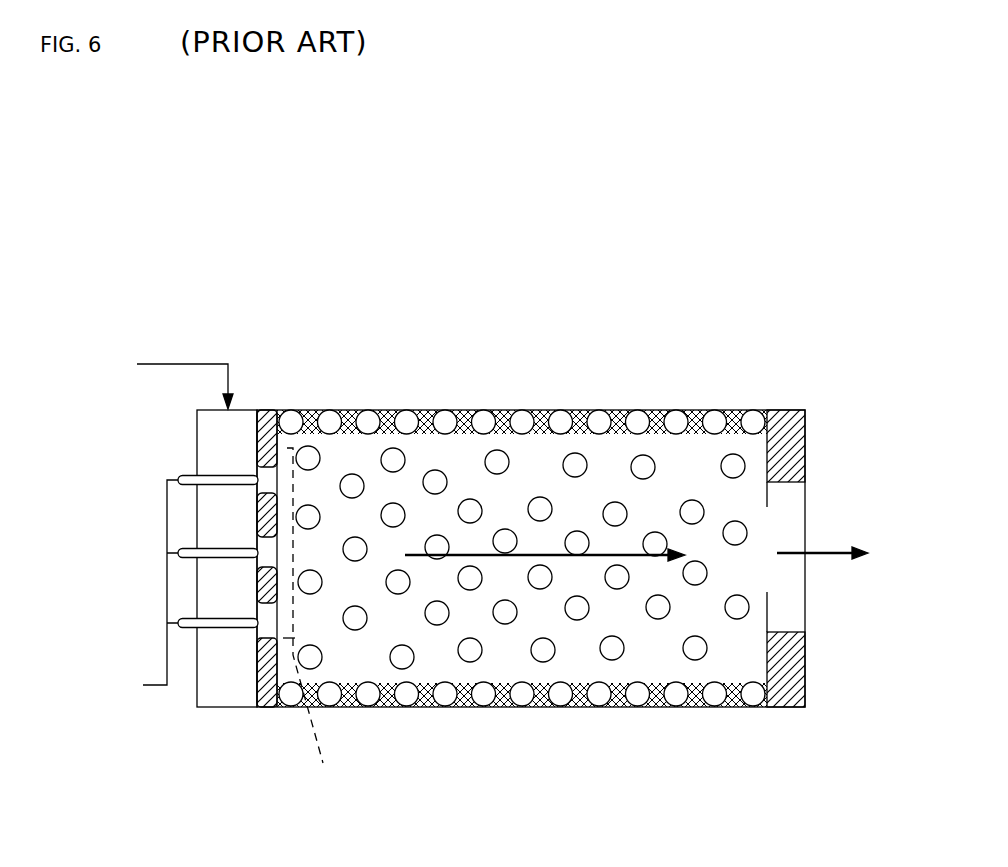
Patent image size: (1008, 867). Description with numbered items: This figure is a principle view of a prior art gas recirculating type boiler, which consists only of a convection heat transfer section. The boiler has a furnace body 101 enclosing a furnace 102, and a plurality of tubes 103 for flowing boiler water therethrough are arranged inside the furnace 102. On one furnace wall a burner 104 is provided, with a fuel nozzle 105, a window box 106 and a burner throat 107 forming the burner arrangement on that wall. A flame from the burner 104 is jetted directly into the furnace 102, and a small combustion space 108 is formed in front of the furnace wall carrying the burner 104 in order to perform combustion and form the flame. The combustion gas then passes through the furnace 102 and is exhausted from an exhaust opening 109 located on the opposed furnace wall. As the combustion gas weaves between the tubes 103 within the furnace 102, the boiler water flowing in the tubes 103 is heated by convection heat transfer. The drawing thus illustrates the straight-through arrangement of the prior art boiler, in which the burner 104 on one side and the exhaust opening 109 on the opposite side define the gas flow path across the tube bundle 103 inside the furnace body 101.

The furnace body 101 is at (577, 410).
The furnace 102 is at (472, 410).
The tubes 103 is at (470, 510).
The burner 104 is at (154, 557).
The fuel nozzle 105 is at (217, 628).
The window box 106 is at (228, 703).
The burner throat 107 is at (283, 416).
The combustion space 108 is at (318, 624).
The exhaust opening 109 is at (800, 608).